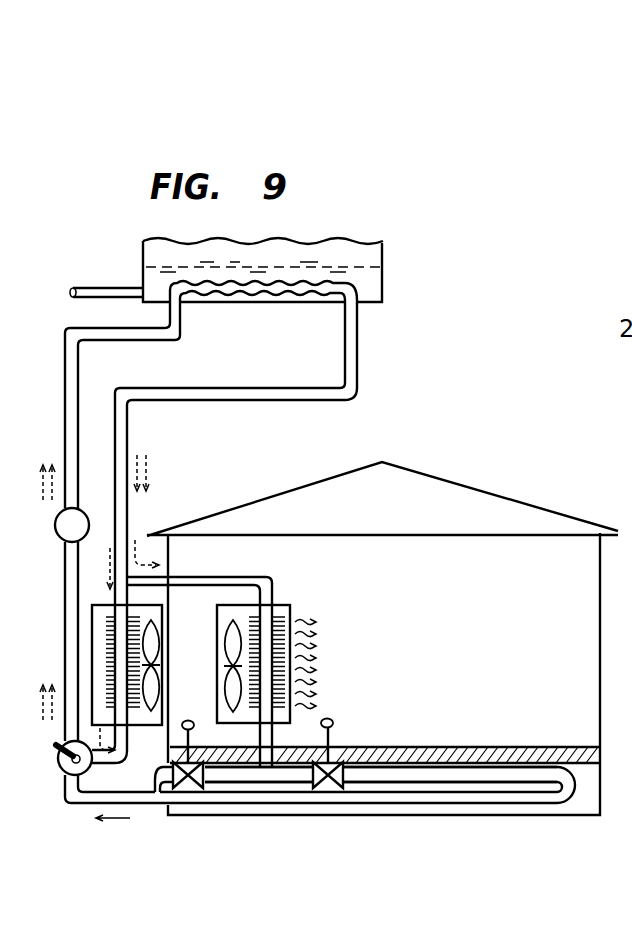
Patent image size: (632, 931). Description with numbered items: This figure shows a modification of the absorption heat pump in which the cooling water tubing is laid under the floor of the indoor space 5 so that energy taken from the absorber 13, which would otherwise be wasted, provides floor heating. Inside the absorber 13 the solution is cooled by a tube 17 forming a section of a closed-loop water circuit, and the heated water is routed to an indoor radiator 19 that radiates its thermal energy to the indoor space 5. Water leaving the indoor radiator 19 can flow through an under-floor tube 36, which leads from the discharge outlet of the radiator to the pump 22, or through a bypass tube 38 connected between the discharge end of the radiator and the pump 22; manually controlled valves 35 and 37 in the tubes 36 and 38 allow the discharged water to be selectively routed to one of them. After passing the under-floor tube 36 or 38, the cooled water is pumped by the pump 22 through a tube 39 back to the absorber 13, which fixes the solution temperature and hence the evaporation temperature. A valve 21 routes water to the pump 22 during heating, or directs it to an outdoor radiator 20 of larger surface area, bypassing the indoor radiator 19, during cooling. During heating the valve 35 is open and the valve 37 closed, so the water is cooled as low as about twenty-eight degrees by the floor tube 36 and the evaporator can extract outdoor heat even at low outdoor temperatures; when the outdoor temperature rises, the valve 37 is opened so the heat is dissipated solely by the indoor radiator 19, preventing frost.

The indoor space 5 is at (512, 546).
The absorber 13 is at (370, 250).
The cooling tube 17 is at (262, 287).
The indoor radiator 19 is at (283, 607).
The outdoor radiator 20 is at (98, 634).
The valve 21 is at (62, 769).
The pump 22 is at (57, 533).
The manually controlled valve 35 is at (325, 788).
The under floor tube 36 is at (443, 768).
The manually controlled valve 37 is at (181, 788).
The bypass tube 38 is at (226, 783).
The tube 39 is at (73, 393).